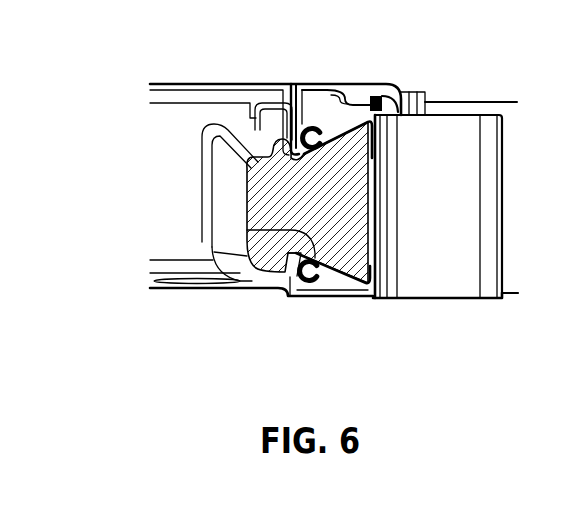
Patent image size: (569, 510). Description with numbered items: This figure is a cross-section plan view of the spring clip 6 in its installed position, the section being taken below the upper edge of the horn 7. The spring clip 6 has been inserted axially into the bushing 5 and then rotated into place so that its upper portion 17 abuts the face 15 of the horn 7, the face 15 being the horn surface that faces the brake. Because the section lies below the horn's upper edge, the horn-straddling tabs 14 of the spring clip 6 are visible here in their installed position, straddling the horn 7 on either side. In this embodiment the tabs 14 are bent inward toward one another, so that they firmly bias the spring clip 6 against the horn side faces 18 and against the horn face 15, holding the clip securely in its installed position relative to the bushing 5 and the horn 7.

The bushing 5 is at (422, 93).
The spring clip 6 is at (447, 270).
The horn 7 is at (203, 131).
The horn-straddling tabs 14 is at (341, 272).
The face of the horn 15 is at (369, 157).
The upper portion 17 is at (375, 150).
The horn side faces 18 is at (247, 230).